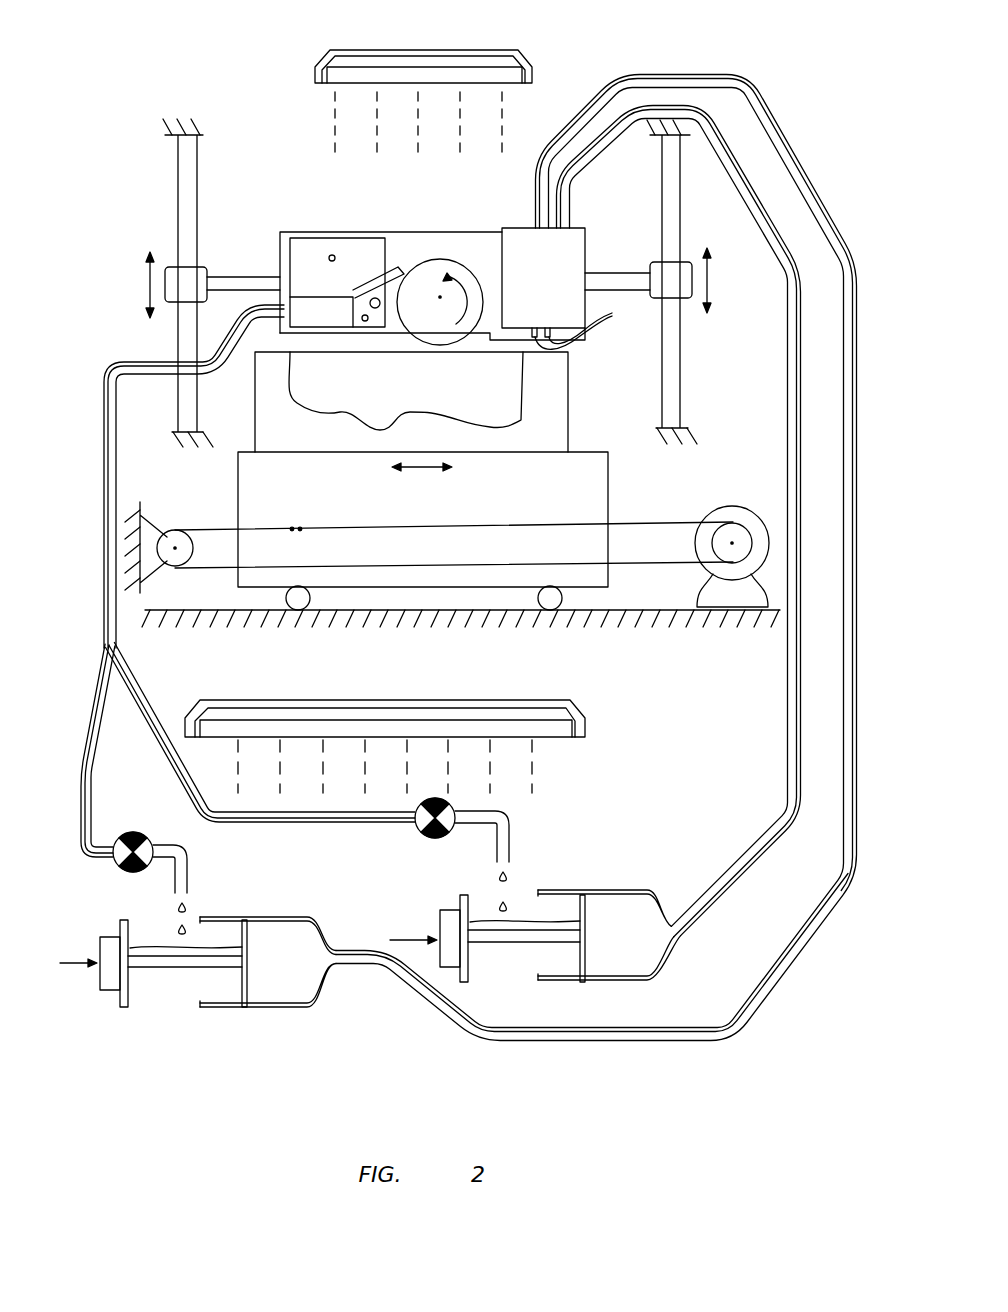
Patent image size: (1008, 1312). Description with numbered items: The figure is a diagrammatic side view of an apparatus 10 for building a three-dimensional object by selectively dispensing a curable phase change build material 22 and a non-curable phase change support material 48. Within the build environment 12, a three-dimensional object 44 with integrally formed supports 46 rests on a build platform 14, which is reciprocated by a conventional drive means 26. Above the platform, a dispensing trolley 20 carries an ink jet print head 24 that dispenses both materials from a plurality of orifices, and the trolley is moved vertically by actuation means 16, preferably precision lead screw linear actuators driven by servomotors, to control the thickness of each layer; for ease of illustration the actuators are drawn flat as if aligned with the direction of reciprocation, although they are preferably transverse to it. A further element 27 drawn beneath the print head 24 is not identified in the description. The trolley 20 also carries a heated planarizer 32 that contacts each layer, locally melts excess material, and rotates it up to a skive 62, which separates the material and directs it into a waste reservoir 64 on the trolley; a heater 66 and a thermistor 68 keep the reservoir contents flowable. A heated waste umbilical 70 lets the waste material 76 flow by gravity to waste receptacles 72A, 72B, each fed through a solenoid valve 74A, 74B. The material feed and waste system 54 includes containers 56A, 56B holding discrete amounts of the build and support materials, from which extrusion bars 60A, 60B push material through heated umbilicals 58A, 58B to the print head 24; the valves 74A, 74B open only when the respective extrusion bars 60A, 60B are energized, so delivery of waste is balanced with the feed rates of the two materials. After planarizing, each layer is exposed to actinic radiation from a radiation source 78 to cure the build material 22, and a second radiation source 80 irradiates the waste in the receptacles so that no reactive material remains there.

The apparatus 10 is at (319, 111).
The build environment 12 is at (595, 337).
The build platform 14 is at (498, 487).
The actuation means 16 is at (181, 251).
The dispensing trolley 20 is at (458, 231).
The curable phase change build material 22 is at (637, 957).
The print head 24 is at (575, 254).
The drive means 26 is at (729, 512).
The cable 27 is at (587, 328).
The heated planarizer 32 is at (455, 328).
The three-dimensional object 44 is at (373, 385).
The supports 46 is at (283, 445).
The non-curable phase change support material 48 is at (283, 992).
The material feed and waste system 54 is at (233, 1062).
The container 56A is at (628, 863).
The container 56B is at (250, 900).
The umbilical 58A is at (786, 716).
The umbilical 58B is at (795, 962).
The extrusion bar 60A is at (442, 923).
The extrusion bar 60B is at (110, 983).
The skive 62 is at (397, 267).
The waste reservoir 64 is at (294, 248).
The heater 66 is at (373, 298).
The thermistor 68 is at (338, 297).
The heated waste umbilical 70 is at (104, 622).
The waste receptacle 72A is at (490, 903).
The waste receptacle 72B is at (145, 930).
The solenoid valve 74A is at (449, 795).
The solenoid valve 74B is at (135, 831).
The waste material 76 is at (361, 317).
The radiation source 78 is at (468, 73).
The second radiation source 80 is at (527, 722).